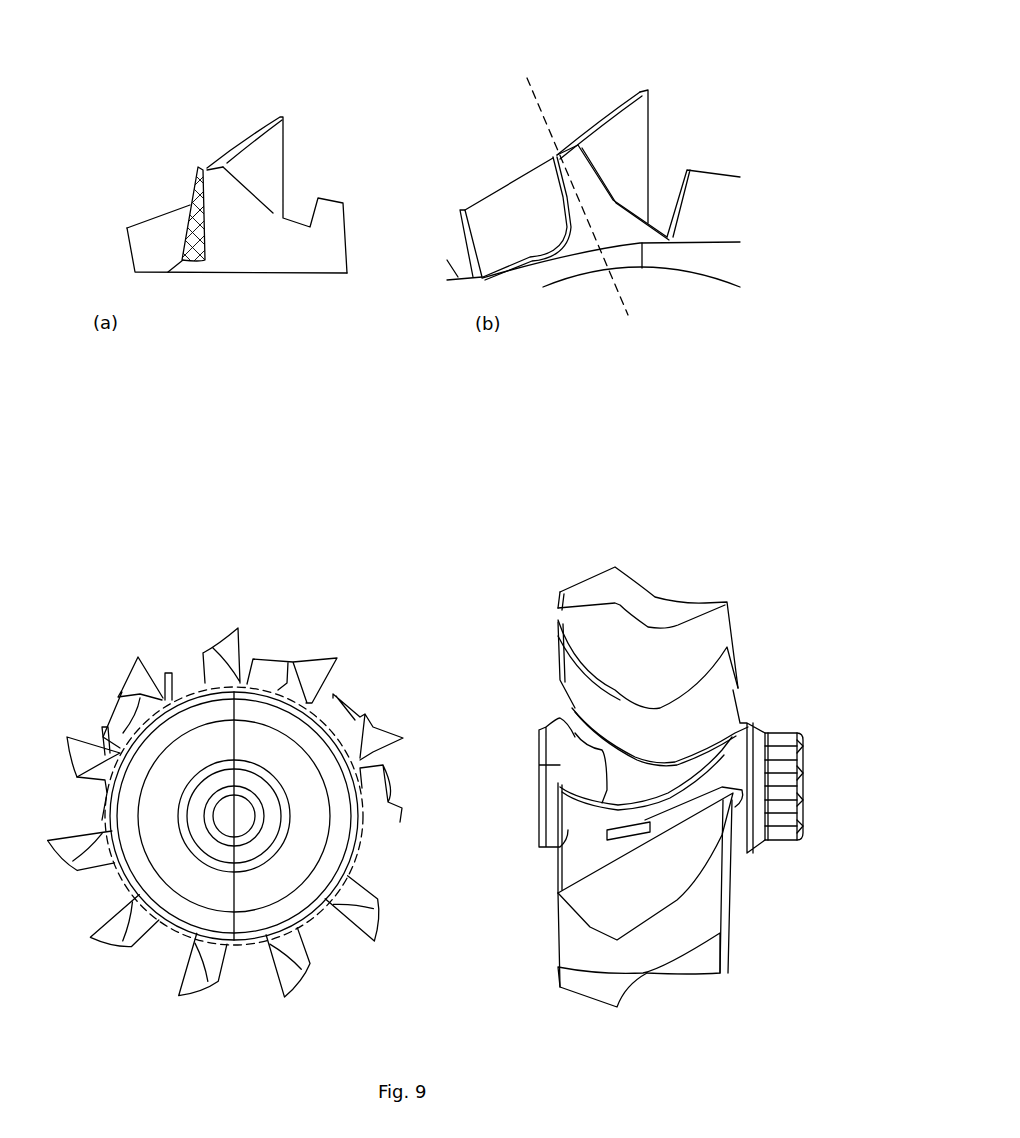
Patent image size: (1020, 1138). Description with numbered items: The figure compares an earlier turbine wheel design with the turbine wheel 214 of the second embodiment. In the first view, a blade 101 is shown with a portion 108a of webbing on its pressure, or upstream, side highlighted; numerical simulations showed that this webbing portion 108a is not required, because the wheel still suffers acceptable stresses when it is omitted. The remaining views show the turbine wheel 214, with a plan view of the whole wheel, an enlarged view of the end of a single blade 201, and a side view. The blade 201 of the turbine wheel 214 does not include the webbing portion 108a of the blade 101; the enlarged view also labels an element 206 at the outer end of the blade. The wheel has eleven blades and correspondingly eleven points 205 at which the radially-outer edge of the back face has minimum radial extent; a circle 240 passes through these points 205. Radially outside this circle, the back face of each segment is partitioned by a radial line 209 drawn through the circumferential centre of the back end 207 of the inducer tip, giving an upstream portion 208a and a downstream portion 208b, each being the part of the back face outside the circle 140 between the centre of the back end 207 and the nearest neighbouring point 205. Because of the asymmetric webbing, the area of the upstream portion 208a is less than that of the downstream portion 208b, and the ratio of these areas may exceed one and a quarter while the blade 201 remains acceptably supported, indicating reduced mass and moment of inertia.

The blade 101 is at (215, 93).
The portion of webbing 108a is at (197, 203).
The blade 201 is at (573, 88).
The points 205 is at (158, 700).
The blade tip 206 is at (640, 90).
The back end of inducer tip 207 is at (553, 157).
The upstream portion 208a is at (568, 197).
The downstream portion 208b is at (615, 203).
The radial line 209 is at (618, 293).
The circle 140 is at (667, 250).
The turbine wheel 214 is at (258, 580).
The circle 240 is at (300, 940).